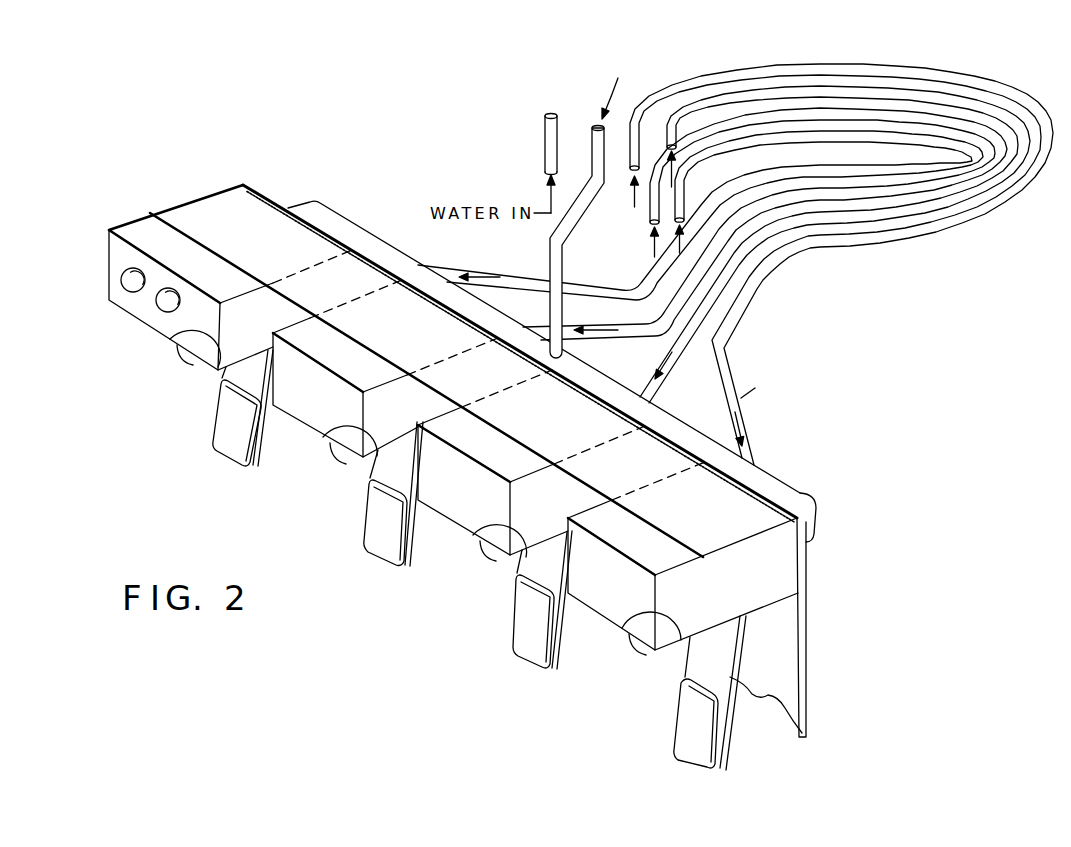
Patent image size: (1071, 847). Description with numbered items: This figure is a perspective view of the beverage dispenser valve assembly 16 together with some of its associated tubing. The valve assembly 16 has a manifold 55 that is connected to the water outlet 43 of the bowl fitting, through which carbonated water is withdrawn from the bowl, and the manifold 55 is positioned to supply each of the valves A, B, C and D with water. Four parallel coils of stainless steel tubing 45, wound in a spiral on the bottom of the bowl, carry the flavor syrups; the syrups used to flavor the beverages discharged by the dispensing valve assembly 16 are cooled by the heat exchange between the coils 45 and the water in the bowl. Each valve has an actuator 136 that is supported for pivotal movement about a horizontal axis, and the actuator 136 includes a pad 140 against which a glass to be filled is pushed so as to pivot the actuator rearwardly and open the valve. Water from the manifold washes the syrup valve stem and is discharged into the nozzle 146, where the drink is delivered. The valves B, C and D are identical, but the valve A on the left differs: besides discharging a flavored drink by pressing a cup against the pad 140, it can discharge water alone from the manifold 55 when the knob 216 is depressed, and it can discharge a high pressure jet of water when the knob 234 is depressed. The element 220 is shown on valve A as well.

The dispensing valve assembly 16 is at (178, 197).
The outlet 43 is at (569, 236).
The coils of stainless steel tubing 45 is at (975, 77).
The manifold 55 is at (811, 510).
The actuator 136 is at (250, 377).
The pad 140 is at (228, 426).
The nozzle 146 is at (348, 466).
The knob 216 is at (160, 306).
The water outlet 220 is at (190, 362).
The knob 234 is at (122, 283).